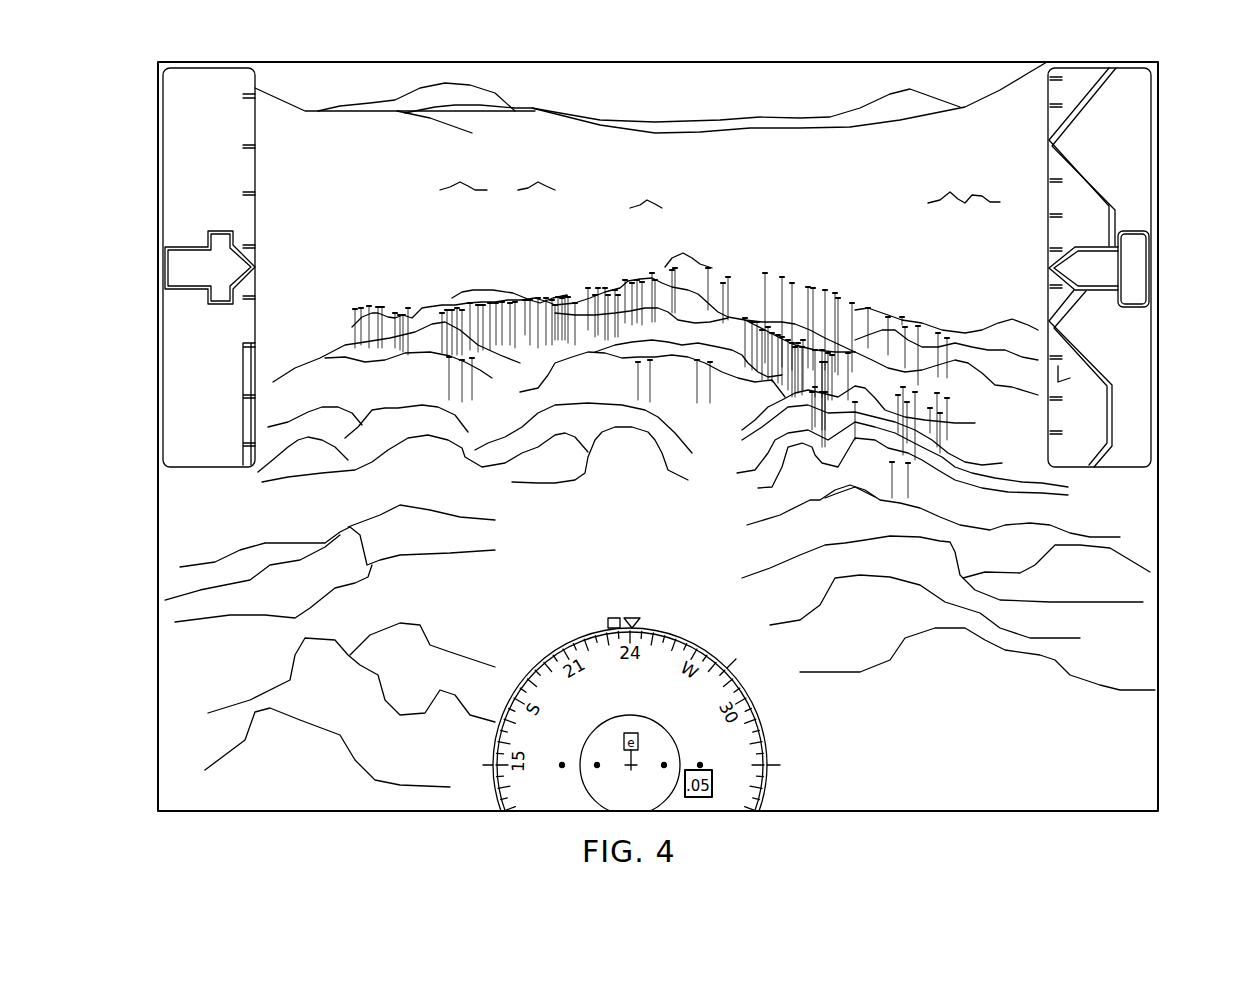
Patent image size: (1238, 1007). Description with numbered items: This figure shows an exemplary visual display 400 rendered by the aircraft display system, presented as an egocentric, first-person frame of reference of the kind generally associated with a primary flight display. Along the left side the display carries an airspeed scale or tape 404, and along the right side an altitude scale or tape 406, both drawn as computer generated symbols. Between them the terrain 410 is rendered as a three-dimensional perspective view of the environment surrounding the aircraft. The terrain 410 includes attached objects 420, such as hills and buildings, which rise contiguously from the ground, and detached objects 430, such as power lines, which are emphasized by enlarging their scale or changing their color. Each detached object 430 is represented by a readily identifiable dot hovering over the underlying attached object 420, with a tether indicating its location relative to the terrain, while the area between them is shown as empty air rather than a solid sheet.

The visual display 400 is at (122, 128).
The airspeed scale or tape 404 is at (181, 338).
The altitude scale or tape 406 is at (1144, 188).
The terrain 410 is at (712, 200).
The attached objects 420 is at (343, 530).
The detached objects 430 is at (538, 278).